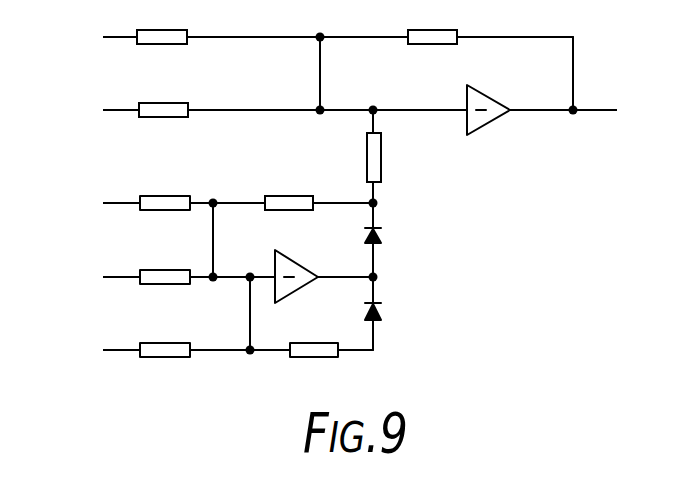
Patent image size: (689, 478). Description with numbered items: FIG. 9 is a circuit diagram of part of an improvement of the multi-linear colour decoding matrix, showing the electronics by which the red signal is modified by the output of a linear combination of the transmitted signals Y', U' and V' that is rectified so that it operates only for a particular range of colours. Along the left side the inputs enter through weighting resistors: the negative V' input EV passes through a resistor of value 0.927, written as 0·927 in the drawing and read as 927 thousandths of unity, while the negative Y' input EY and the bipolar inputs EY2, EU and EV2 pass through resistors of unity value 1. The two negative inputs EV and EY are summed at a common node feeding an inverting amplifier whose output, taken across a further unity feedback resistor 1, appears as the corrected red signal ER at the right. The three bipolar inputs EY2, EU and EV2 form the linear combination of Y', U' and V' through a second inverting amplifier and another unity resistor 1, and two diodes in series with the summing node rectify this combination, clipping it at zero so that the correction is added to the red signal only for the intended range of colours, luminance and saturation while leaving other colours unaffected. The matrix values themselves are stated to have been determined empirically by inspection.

The weighting resistor 0.927 is at (157, 22).
The weighting resistor (0.927) 927 is at (157, 22).
The unity weighting resistor 1 is at (298, 108).
The -E'V input EV is at (39, 40).
The -E'Y input EY is at (39, 113).
The ±E'Y input EY2 is at (77, 184).
The ±E'U input EU is at (77, 258).
The ±E'V input EV2 is at (77, 331).
The E'R output ER is at (653, 88).